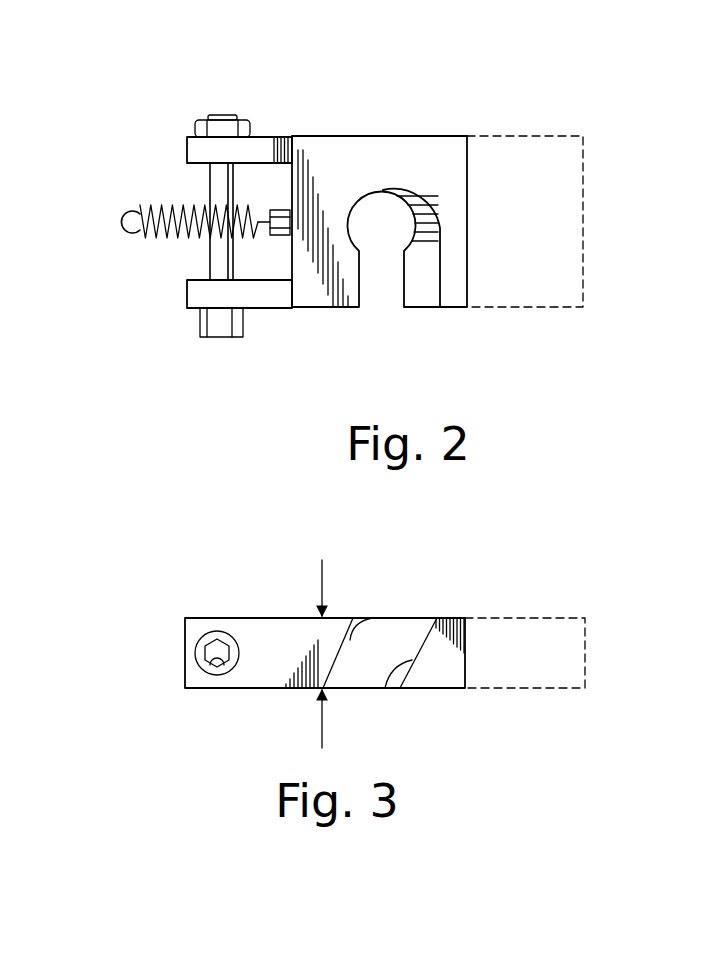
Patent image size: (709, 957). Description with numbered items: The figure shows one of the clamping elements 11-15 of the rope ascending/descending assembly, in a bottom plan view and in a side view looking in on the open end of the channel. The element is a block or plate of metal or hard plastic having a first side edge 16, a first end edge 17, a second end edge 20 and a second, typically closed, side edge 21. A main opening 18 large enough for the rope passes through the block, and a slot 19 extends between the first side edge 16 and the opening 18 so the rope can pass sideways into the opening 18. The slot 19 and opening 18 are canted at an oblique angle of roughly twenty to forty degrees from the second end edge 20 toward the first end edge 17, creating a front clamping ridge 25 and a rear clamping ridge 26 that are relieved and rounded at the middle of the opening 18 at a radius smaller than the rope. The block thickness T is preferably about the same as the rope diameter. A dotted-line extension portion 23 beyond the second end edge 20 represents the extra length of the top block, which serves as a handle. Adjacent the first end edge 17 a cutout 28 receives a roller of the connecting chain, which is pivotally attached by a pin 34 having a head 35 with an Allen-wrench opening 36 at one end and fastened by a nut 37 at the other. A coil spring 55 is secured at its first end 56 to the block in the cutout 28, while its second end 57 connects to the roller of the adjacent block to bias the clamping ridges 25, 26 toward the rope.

In FIG. 2, the clamping elements 11-15 is at (431, 133).
In FIG. 3, the clamping elements 11-15 is at (232, 603).
In FIG. 2, the first side edge 16 is at (330, 308).
In FIG. 3, the first side edge 16 is at (286, 645).
In FIG. 2, the first end edge 17 is at (187, 148).
In FIG. 3, the first end edge 17 is at (197, 633).
In FIG. 2, the main opening 18 is at (394, 216).
In FIG. 3, the main opening 18 is at (370, 658).
In FIG. 2, the slot 19 is at (390, 308).
In FIG. 2, the second end edge 20 is at (467, 190).
In FIG. 3, the second end edge 20 is at (466, 635).
In FIG. 2, the second side edge 21 is at (350, 136).
In FIG. 2, the extension portion 23 is at (586, 311).
In FIG. 3, the extension portion 23 is at (592, 695).
In FIG. 2, the front clamping ridge 25 is at (415, 223).
In FIG. 2, the rear clamping ridge 26 is at (363, 214).
In FIG. 2, the cutout 28 is at (262, 170).
In FIG. 2, the pins 34 is at (215, 185).
In FIG. 2, the head 35 is at (220, 337).
In FIG. 3, the head 35 is at (198, 652).
In FIG. 3, the Allen-wrench opening 36 is at (225, 662).
In FIG. 2, the nut 37 is at (217, 120).
In FIG. 2, the coil spring 55 is at (251, 250).
In FIG. 2, the first end 56 is at (283, 212).
In FIG. 2, the second end 57 is at (127, 236).
In FIG. 3, the thickness T is at (325, 570).